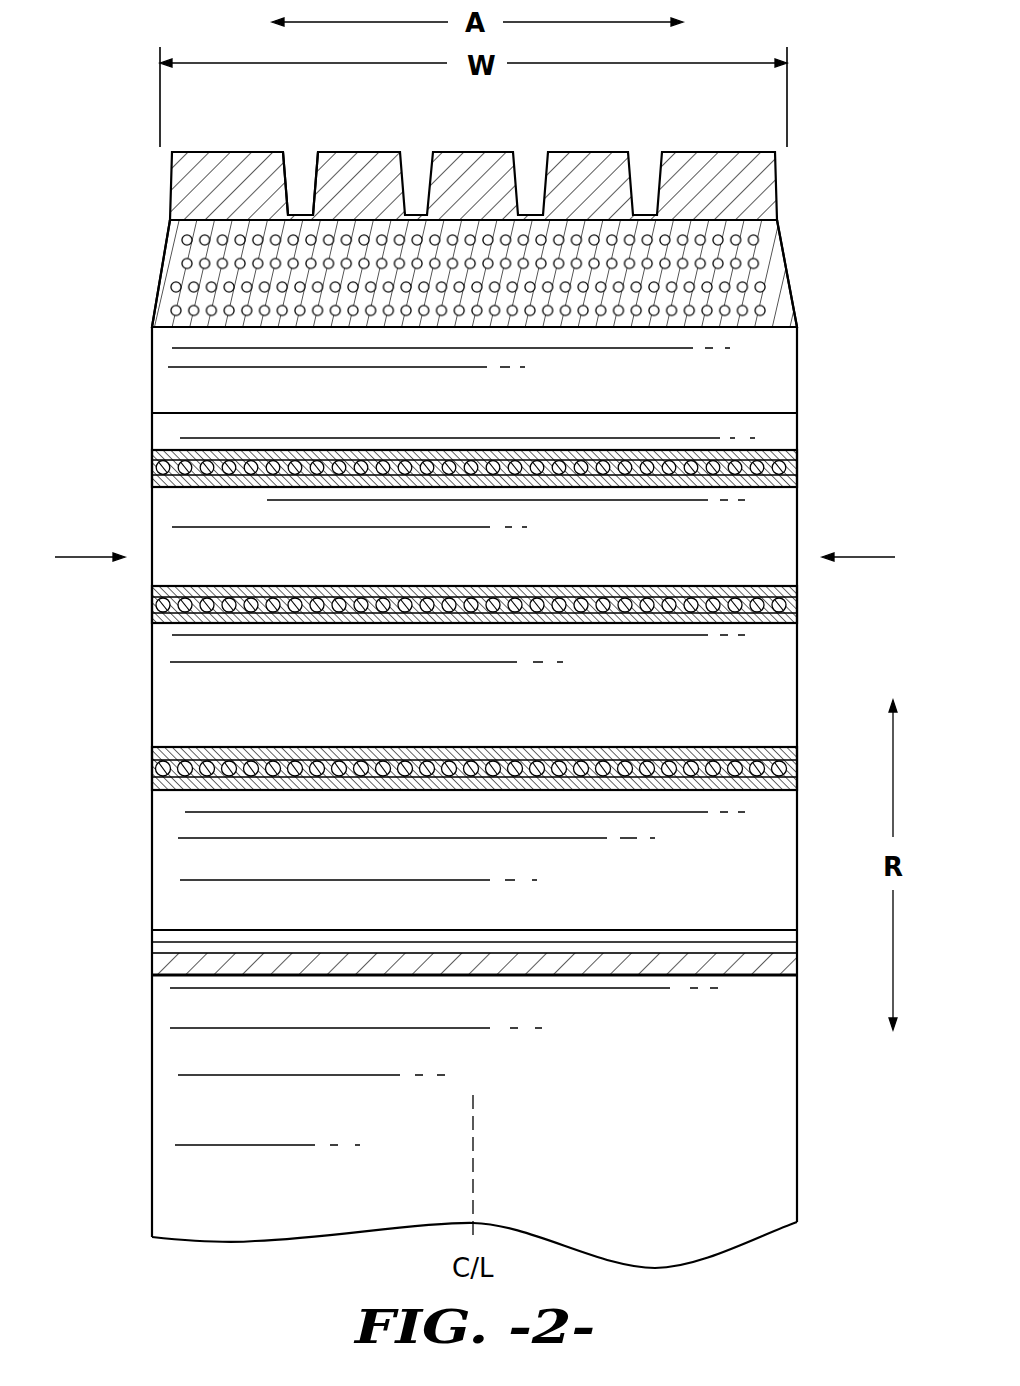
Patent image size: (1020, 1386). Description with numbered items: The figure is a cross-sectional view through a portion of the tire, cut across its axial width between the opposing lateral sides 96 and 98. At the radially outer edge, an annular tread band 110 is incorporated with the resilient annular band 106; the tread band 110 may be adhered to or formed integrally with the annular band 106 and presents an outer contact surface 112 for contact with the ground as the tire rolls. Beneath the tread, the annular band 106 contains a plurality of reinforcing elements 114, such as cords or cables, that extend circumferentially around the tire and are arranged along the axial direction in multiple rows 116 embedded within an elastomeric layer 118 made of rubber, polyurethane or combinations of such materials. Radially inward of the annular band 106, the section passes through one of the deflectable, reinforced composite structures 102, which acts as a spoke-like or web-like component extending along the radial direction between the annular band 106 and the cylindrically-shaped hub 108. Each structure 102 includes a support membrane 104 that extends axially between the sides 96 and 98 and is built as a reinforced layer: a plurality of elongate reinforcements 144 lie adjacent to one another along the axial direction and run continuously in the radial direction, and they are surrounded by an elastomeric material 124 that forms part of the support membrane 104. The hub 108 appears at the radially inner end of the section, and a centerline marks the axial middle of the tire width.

The lateral side 96 is at (71, 562).
The lateral side 98 is at (878, 562).
The reinforced structure 102 is at (778, 532).
The support membrane 104 is at (152, 468).
The annular band 106 is at (785, 253).
The hub 108 is at (165, 965).
The tread band 110 is at (778, 187).
The outer contact surface 112 is at (221, 146).
The reinforcing element 114 is at (531, 232).
The row 116 is at (162, 262).
The elastomeric layer 118 is at (188, 250).
The elastomeric material 124 is at (262, 467).
The elongate reinforcement 144 is at (323, 472).